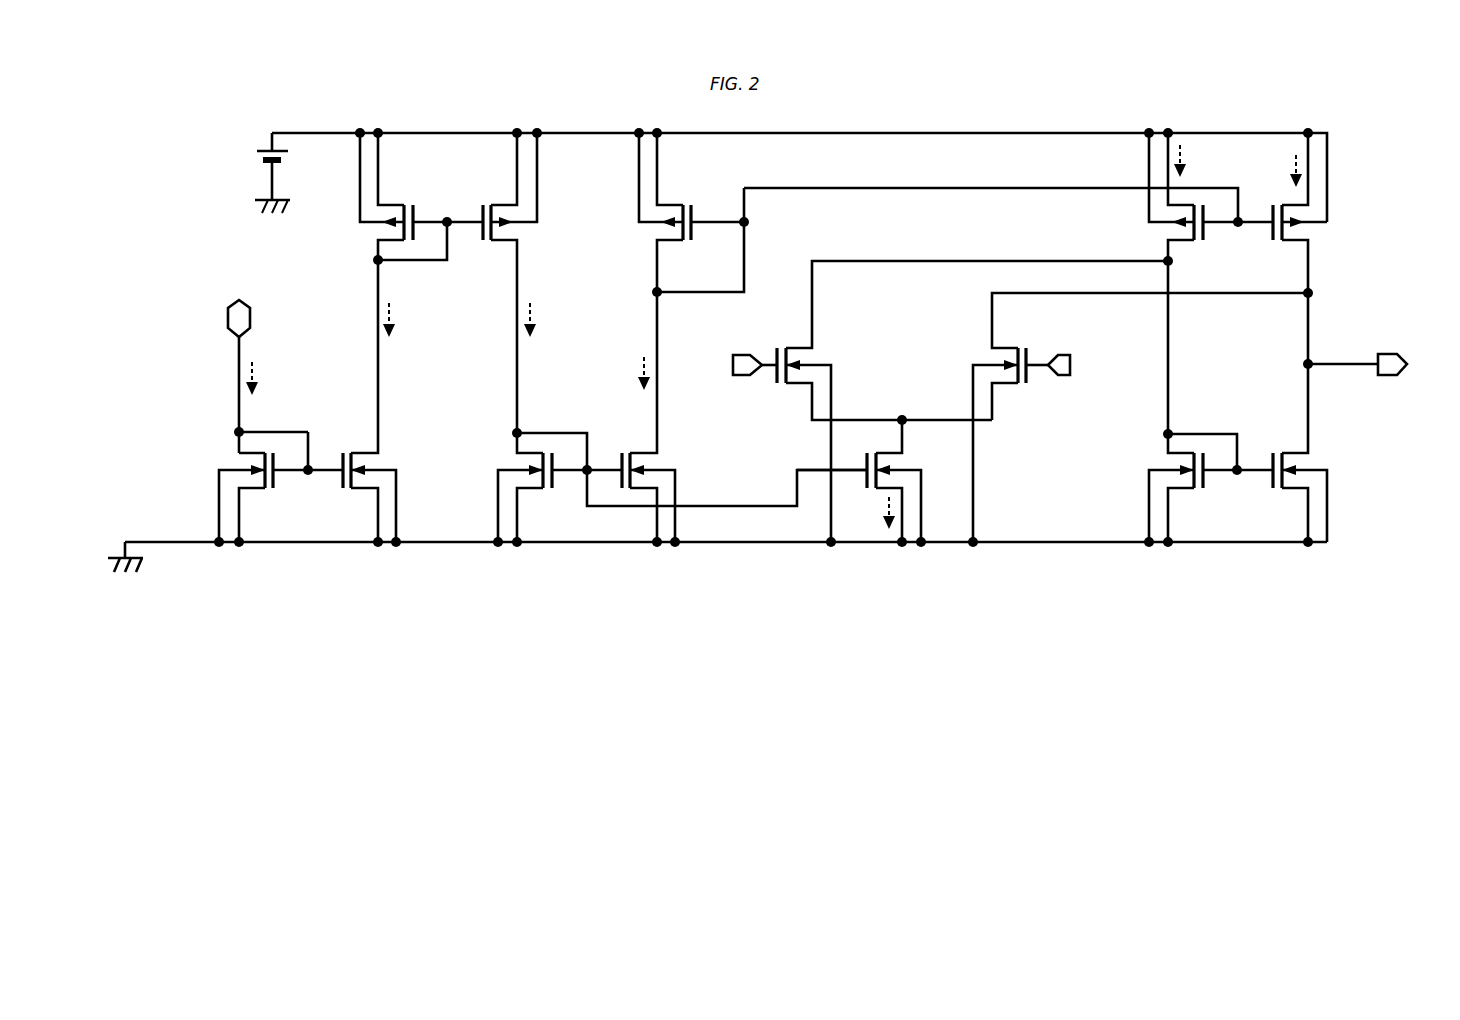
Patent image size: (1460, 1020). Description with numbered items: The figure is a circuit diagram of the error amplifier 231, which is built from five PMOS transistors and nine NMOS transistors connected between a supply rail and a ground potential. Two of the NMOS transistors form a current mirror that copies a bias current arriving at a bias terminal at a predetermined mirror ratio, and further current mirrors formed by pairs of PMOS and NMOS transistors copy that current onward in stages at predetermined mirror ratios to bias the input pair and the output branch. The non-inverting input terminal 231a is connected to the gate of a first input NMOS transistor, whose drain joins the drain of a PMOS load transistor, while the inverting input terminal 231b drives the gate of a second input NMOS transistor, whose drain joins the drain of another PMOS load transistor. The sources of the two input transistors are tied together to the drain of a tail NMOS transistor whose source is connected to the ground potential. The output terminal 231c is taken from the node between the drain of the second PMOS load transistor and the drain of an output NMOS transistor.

The error amplifier 231 is at (281, 635).
The non-inverting input terminal 231a is at (745, 390).
The inverting input terminal 231b is at (1057, 390).
The output terminal 231c is at (1391, 392).